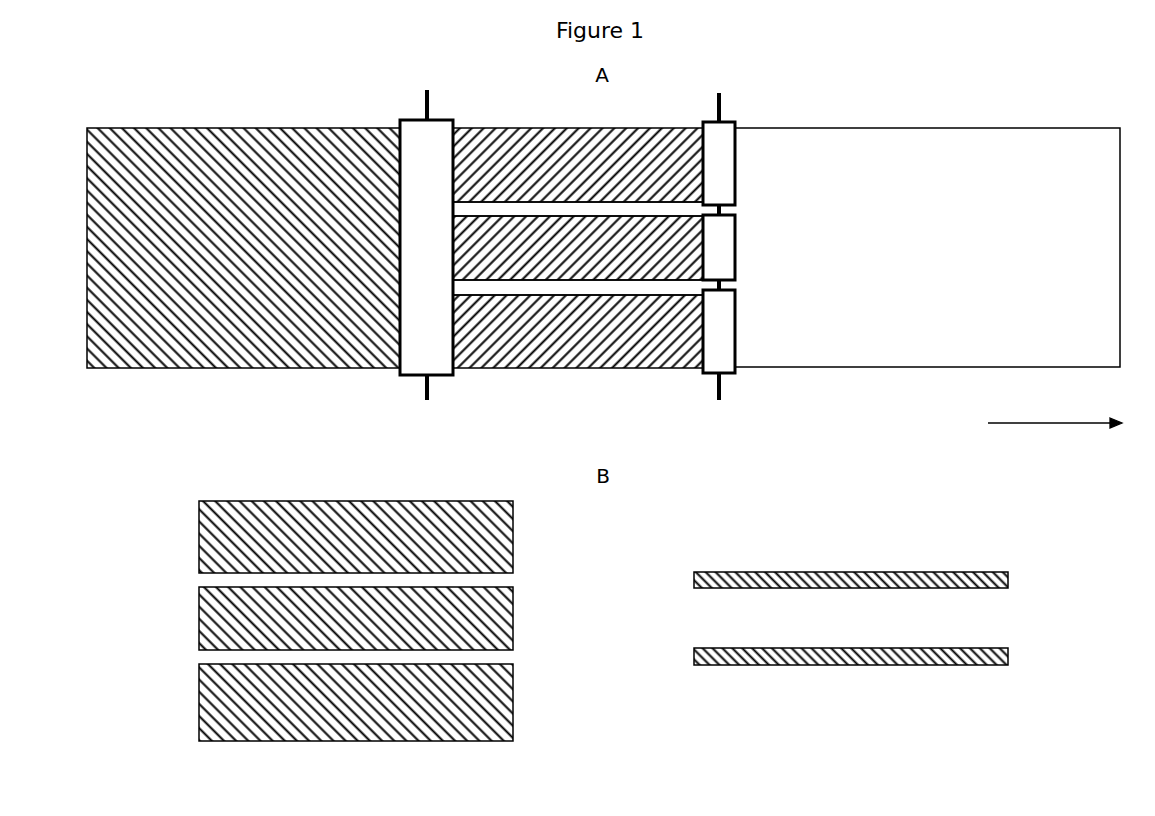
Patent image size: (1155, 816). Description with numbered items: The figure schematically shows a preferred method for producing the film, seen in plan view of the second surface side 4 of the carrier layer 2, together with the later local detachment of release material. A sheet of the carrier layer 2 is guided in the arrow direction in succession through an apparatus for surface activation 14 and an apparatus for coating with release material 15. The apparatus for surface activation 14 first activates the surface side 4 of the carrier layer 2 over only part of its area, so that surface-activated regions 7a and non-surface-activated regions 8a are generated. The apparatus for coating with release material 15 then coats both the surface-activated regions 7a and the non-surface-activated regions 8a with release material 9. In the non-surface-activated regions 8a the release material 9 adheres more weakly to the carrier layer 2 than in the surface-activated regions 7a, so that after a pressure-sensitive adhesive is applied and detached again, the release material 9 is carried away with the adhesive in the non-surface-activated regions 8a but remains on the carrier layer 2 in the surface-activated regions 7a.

The carrier layer 2 is at (1023, 128).
The second surface side 4 is at (1065, 142).
The surface-activated regions 7a is at (520, 335).
The non-surface-activated regions 8a is at (672, 285).
The release material 9 is at (770, 582).
The apparatus for surface activation 14 is at (720, 328).
The apparatus for coating with release material 15 is at (427, 145).